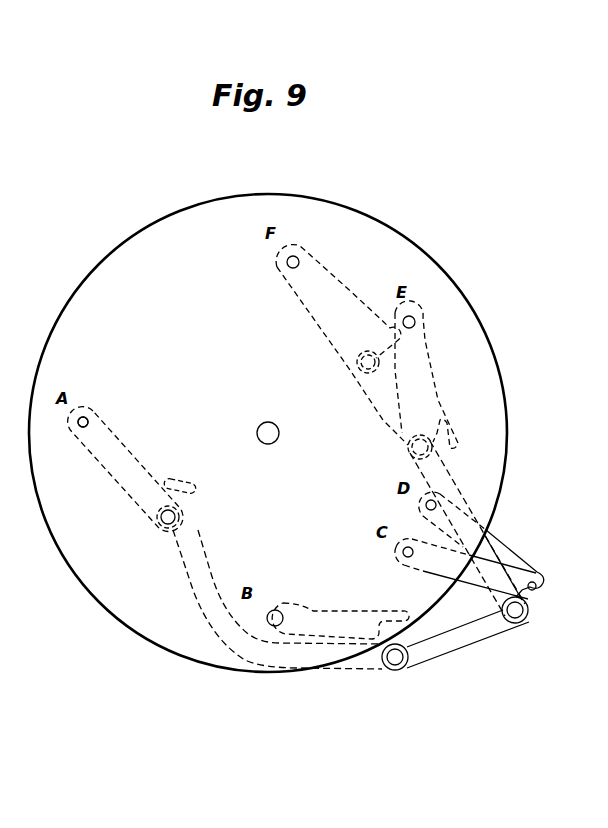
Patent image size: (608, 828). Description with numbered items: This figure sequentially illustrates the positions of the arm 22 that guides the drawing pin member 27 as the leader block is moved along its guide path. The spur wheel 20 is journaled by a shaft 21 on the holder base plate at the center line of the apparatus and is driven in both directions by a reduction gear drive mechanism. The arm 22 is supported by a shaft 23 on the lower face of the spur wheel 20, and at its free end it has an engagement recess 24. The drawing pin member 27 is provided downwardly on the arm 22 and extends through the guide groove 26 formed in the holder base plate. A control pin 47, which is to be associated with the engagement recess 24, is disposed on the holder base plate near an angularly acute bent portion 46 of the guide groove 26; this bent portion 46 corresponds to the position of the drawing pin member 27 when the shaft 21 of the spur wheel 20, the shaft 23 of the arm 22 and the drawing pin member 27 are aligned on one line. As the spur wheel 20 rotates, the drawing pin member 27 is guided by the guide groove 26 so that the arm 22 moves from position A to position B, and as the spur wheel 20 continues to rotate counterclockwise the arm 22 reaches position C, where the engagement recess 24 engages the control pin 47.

The spur wheel 20 is at (362, 227).
The shaft 21 is at (279, 428).
The arm 22 is at (130, 447).
The shaft 23 is at (87, 418).
The engagement recess 24 is at (165, 485).
The guide groove 26 is at (448, 650).
The drawing pin member 27 is at (172, 517).
The angularly acute bent portion 46 is at (528, 623).
The control pin 47 is at (542, 592).